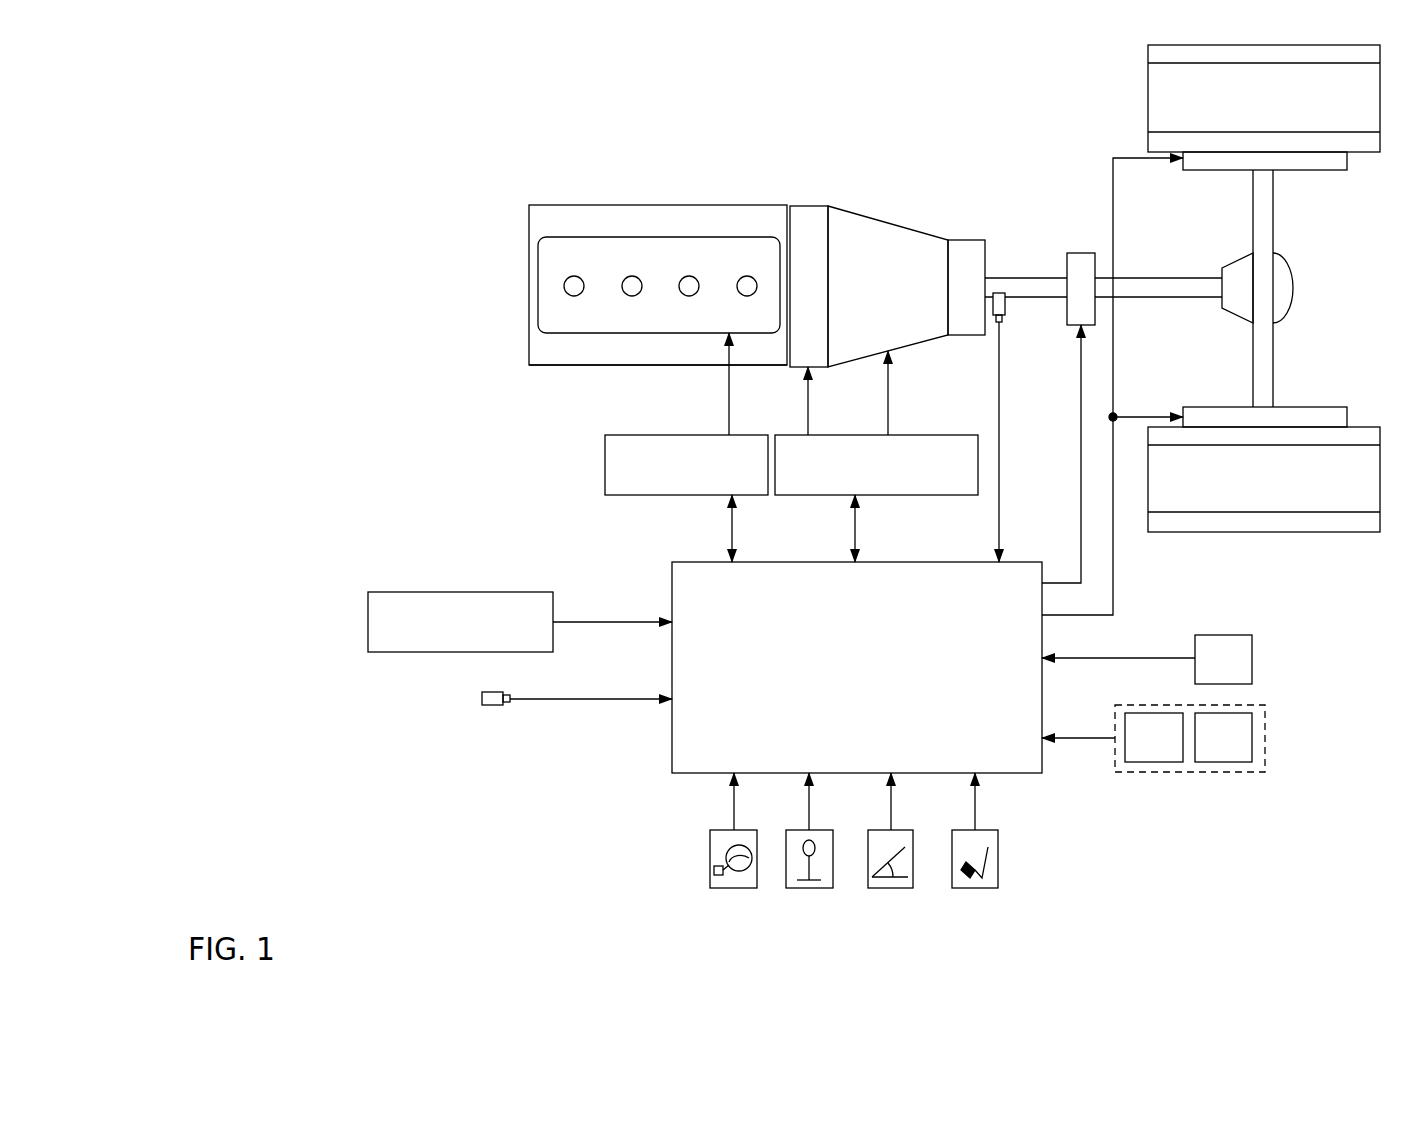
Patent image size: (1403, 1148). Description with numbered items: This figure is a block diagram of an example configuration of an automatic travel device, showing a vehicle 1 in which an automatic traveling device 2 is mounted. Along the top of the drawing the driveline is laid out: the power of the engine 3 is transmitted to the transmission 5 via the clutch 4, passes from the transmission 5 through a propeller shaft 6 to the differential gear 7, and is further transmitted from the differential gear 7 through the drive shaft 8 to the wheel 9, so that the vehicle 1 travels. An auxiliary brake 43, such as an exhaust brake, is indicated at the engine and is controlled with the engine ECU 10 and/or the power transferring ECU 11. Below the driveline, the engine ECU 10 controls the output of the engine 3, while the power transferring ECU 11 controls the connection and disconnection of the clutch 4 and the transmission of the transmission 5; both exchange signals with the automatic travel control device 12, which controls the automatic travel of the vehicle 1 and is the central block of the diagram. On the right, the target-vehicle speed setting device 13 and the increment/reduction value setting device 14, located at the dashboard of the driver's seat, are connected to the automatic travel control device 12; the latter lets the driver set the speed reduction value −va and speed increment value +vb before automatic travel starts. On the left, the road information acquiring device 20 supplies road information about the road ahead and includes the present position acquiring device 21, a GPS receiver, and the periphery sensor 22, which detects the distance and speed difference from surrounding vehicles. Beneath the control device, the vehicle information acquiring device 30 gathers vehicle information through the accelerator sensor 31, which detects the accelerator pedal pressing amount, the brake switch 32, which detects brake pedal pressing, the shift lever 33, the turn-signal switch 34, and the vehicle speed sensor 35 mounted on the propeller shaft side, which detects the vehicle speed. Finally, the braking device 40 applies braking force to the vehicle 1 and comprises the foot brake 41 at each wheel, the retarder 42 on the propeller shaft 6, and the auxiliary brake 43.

The vehicle 1 is at (527, 185).
The automatic traveling device 2 is at (1015, 790).
The engine 3 is at (663, 204).
The clutch 4 is at (812, 206).
The transmission 5 is at (901, 212).
The propeller shaft 6 is at (1150, 278).
The differential gear 7 is at (1292, 290).
The drive shaft 8 is at (1275, 205).
The wheel 9 is at (1360, 427).
The engine ECU 10 is at (605, 465).
The power transferring ECU 11 is at (945, 435).
The automatic travel control device 12 is at (958, 562).
The target-vehicle speed setting device 13 is at (1252, 658).
The increment/reduction value setting device 14 is at (1265, 738).
The road information acquiring device 20 is at (378, 578).
The present position acquiring device 21 is at (368, 622).
The periphery sensor 22 is at (482, 698).
The vehicle information acquiring device 30 is at (697, 866).
The accelerator sensor 31 is at (893, 888).
The brake switch 32 is at (977, 888).
The shift lever 33 is at (812, 888).
The turn-signal switch 34 is at (737, 888).
The vehicle speed sensor 35 is at (1005, 308).
The braking device 40 is at (1085, 165).
The foot brake 41 is at (1212, 170).
The retarder 42 is at (1081, 253).
The auxiliary brake 43 is at (545, 368).